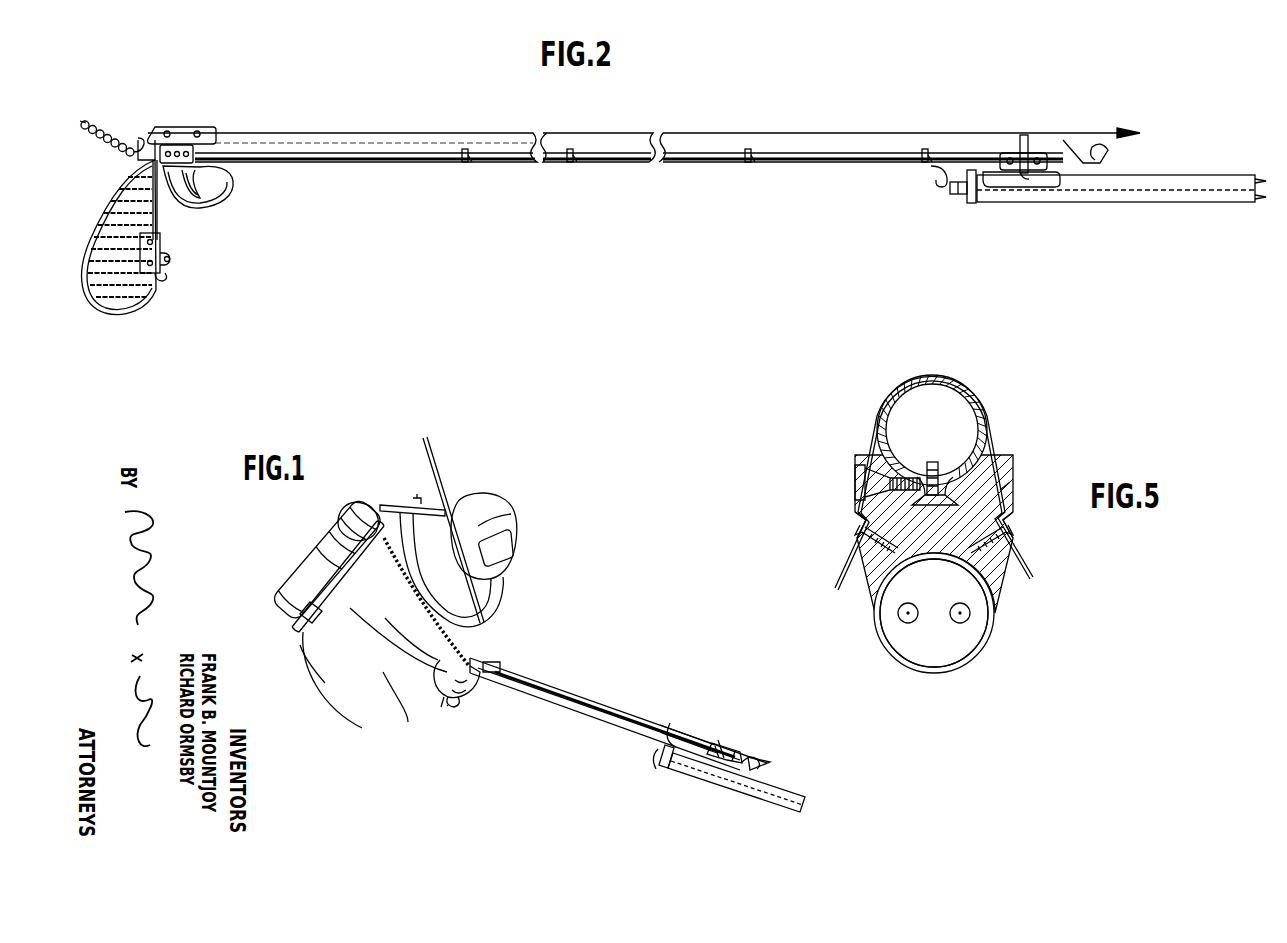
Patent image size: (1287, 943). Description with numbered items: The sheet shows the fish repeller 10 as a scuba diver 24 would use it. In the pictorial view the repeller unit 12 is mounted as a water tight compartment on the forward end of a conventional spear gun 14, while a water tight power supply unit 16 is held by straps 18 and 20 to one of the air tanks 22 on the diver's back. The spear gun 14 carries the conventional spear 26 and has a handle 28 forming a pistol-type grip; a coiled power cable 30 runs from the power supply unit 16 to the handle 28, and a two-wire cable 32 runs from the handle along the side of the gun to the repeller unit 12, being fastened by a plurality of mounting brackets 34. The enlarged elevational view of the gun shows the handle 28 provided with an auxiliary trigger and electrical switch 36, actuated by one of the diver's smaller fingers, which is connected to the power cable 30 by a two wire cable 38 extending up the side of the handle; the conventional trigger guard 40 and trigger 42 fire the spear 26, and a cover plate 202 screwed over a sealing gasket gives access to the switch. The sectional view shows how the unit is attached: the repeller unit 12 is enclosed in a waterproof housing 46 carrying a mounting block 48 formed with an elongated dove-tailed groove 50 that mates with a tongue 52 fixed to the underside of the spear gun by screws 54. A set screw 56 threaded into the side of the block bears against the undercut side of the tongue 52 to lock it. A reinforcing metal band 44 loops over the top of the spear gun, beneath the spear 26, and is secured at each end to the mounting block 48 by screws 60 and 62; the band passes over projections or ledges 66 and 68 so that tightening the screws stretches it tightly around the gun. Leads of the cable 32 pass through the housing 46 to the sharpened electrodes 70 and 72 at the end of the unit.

In FIG. 1, the fish repeller 10 is at (619, 735).
In FIG. 2, the repeller unit 12 is at (1076, 192).
In FIG. 1, the repeller unit 12 is at (710, 780).
In FIG. 5, the repeller unit 12 is at (914, 657).
In FIG. 2, the spear gun 14 is at (496, 140).
In FIG. 1, the spear gun 14 is at (677, 738).
In FIG. 5, the spear gun 14 is at (950, 400).
In FIG. 1, the power supply unit 16 is at (288, 631).
In FIG. 1, the strap 18 is at (288, 580).
In FIG. 1, the strap 20 is at (334, 531).
In FIG. 1, the air tank 22 is at (368, 510).
In FIG. 1, the scuba diver 24 is at (500, 484).
In FIG. 2, the spear 26 is at (994, 133).
In FIG. 1, the spear 26 is at (706, 735).
In FIG. 2, the handle 28 is at (106, 209).
In FIG. 1, the handle 28 is at (452, 704).
In FIG. 2, the power cable 30 is at (109, 130).
In FIG. 1, the power cable 30 is at (466, 647).
In FIG. 2, the two-wire cable 32 is at (706, 148).
In FIG. 1, the two-wire cable 32 is at (562, 717).
In FIG. 2, the mounting brackets 34 is at (468, 164).
In FIG. 2, the auxiliary trigger and electrical switch 36 is at (174, 248).
In FIG. 2, the two wire cable 38 is at (160, 223).
In FIG. 2, the trigger guard 40 is at (237, 181).
In FIG. 2, the trigger 42 is at (202, 193).
In FIG. 2, the metal band 44 is at (1030, 138).
In FIG. 5, the metal band 44 is at (992, 436).
In FIG. 5, the waterproof housing 46 is at (984, 649).
In FIG. 2, the mounting block 48 is at (1006, 186).
In FIG. 5, the mounting block 48 is at (865, 580).
In FIG. 5, the dove-tailed groove 50 is at (951, 475).
In FIG. 5, the tongue 52 is at (1003, 495).
In FIG. 5, the screws 54 is at (926, 465).
In FIG. 5, the set screw 56 is at (860, 492).
In FIG. 5, the screw 60 is at (855, 542).
In FIG. 5, the screw 62 is at (1020, 542).
In FIG. 5, the projection or ledge 66 is at (853, 516).
In FIG. 5, the projection or ledge 68 is at (1018, 516).
In FIG. 5, the electrode 70 is at (967, 620).
In FIG. 5, the electrode 72 is at (900, 619).
In FIG. 2, the cover plate 202 is at (168, 285).